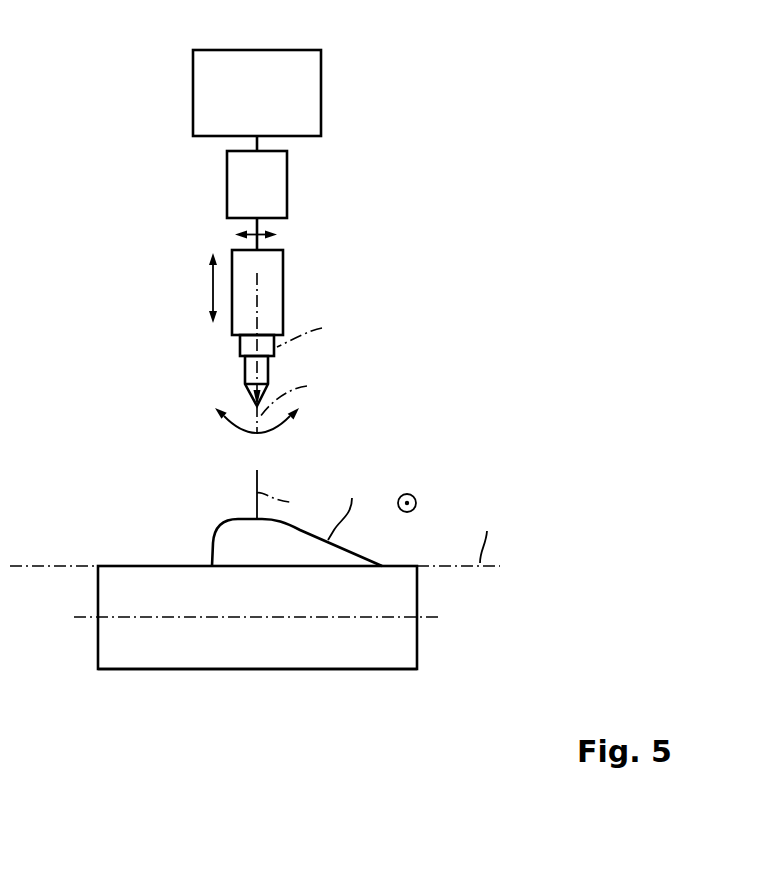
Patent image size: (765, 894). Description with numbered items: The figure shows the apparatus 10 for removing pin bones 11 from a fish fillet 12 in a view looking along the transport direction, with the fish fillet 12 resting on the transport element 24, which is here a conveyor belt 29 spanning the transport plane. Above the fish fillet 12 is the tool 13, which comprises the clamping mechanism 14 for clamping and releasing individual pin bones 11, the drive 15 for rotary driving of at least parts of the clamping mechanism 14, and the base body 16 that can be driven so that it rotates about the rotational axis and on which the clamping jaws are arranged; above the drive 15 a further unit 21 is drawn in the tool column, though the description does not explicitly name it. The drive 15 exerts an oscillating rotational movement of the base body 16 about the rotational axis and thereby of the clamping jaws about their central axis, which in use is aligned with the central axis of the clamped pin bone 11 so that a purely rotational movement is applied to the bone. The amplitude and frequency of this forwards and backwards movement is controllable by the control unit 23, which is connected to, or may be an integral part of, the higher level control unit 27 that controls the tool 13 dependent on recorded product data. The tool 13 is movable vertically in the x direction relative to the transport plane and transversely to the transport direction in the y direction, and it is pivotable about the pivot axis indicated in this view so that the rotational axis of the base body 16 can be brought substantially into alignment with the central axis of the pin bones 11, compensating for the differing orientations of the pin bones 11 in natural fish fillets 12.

The apparatus 10 is at (426, 95).
The pin bone 11 is at (265, 565).
The fish fillet 12 is at (212, 542).
The tool 13 is at (191, 347).
The clamping mechanism 14 is at (231, 392).
The drive 15 is at (291, 360).
The base body 16 is at (247, 373).
The spindle drive 21 is at (288, 270).
The control unit 23 is at (227, 183).
The transport element 24 is at (172, 684).
The control unit 27 is at (193, 90).
The conveyor belt 29 is at (258, 672).